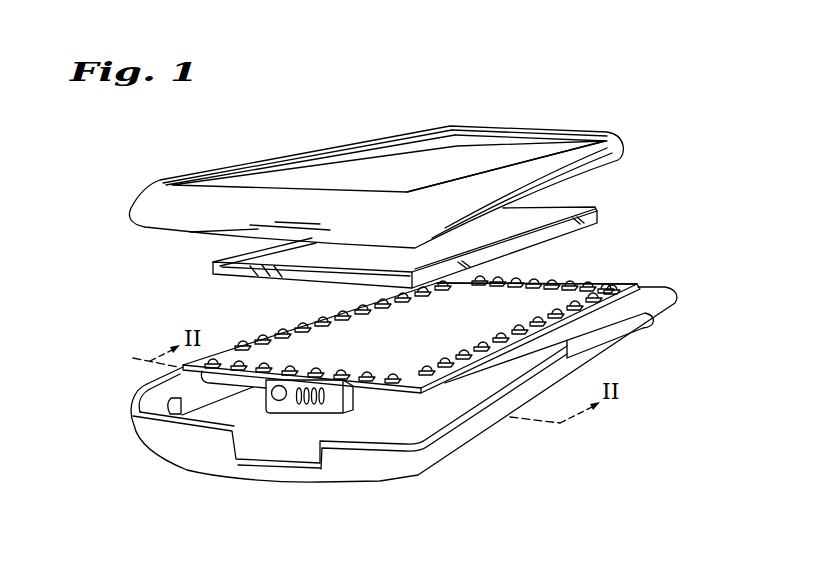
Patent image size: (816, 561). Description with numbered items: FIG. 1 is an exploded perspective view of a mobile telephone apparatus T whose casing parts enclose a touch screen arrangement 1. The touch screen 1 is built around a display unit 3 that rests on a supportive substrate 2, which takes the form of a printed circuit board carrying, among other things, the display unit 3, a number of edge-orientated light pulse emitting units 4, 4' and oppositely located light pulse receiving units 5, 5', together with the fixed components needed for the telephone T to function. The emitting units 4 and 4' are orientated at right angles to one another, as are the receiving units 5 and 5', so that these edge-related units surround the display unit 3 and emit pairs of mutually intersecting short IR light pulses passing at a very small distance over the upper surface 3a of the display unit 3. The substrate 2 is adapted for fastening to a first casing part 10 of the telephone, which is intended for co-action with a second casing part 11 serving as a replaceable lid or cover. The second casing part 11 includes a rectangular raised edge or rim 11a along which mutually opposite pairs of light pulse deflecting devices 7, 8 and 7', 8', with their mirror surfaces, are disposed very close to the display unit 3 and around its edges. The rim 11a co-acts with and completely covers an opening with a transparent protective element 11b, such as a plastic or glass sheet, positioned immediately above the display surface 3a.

The touch screen arrangement 1 is at (610, 263).
The supportive substrate 2 is at (640, 279).
The display unit 3 is at (200, 265).
The upper surface of the display unit 3a is at (416, 351).
The light pulse emitting units 4 is at (340, 315).
The light pulse emitting units 4' is at (543, 267).
The light pulse receiving units 5 is at (519, 374).
The light pulse receiving units 5' is at (313, 442).
The light pulse deflecting device 7 is at (307, 129).
The light pulse deflecting device 7' is at (310, 148).
The light pulse deflecting device 8 is at (506, 134).
The light pulse deflecting device 8' is at (539, 106).
The first casing part 10 is at (183, 445).
The second casing part 11 is at (153, 212).
The rectangular raised edge or rim 11a is at (402, 140).
The transparent protective element 11b is at (453, 140).
The mobile telephone apparatus T is at (646, 179).